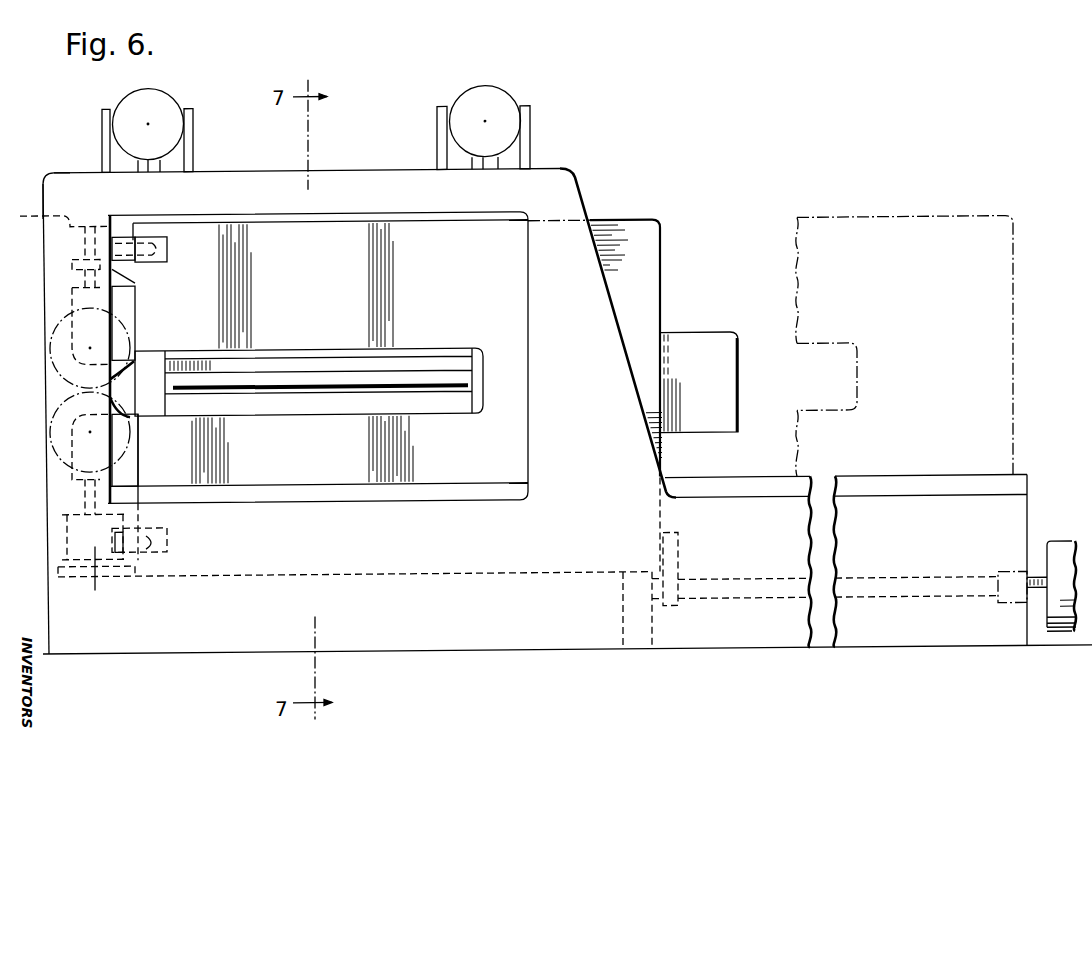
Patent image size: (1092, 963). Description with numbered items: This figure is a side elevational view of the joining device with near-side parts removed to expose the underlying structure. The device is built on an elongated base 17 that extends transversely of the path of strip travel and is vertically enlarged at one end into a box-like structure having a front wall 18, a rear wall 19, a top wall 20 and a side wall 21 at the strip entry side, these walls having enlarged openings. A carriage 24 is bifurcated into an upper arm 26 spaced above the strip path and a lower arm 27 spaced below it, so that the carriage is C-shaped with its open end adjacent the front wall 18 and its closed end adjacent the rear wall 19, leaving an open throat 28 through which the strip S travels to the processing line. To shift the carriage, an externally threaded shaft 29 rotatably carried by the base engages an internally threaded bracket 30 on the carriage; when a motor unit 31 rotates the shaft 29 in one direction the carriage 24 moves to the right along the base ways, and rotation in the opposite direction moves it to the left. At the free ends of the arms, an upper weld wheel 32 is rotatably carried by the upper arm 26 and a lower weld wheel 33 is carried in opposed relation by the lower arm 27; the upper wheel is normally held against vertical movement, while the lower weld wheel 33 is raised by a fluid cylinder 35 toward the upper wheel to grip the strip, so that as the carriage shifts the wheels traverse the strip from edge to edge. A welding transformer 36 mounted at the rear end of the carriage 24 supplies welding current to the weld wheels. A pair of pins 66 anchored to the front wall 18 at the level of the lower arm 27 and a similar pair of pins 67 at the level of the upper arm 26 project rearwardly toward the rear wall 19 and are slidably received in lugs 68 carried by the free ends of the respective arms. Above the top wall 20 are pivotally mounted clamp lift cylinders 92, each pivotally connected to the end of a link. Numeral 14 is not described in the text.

The frame 14 is at (65, 360).
The elongated base 17 is at (662, 654).
The front wall 18 is at (40, 178).
The rear wall 19 is at (578, 175).
The top wall 20 is at (362, 168).
The side wall 21 is at (256, 182).
The carriage 24 is at (666, 257).
The upper arm 26 is at (328, 275).
The lower arm 27 is at (328, 454).
The open throat 28 is at (284, 350).
The externally threaded shaft 29 is at (900, 590).
The internally threaded bracket 30 is at (672, 579).
The motor unit 31 is at (1053, 549).
The upper weld wheel 32 is at (127, 367).
The lower weld wheel 33 is at (120, 390).
The fluid cylinder 35 is at (355, 565).
The welding transformer 36 is at (715, 374).
The pins 66 is at (170, 524).
The pins 67 is at (120, 242).
The lugs 68 is at (160, 260).
The clamp lift cylinder 92 is at (167, 106).
The strip S is at (413, 384).